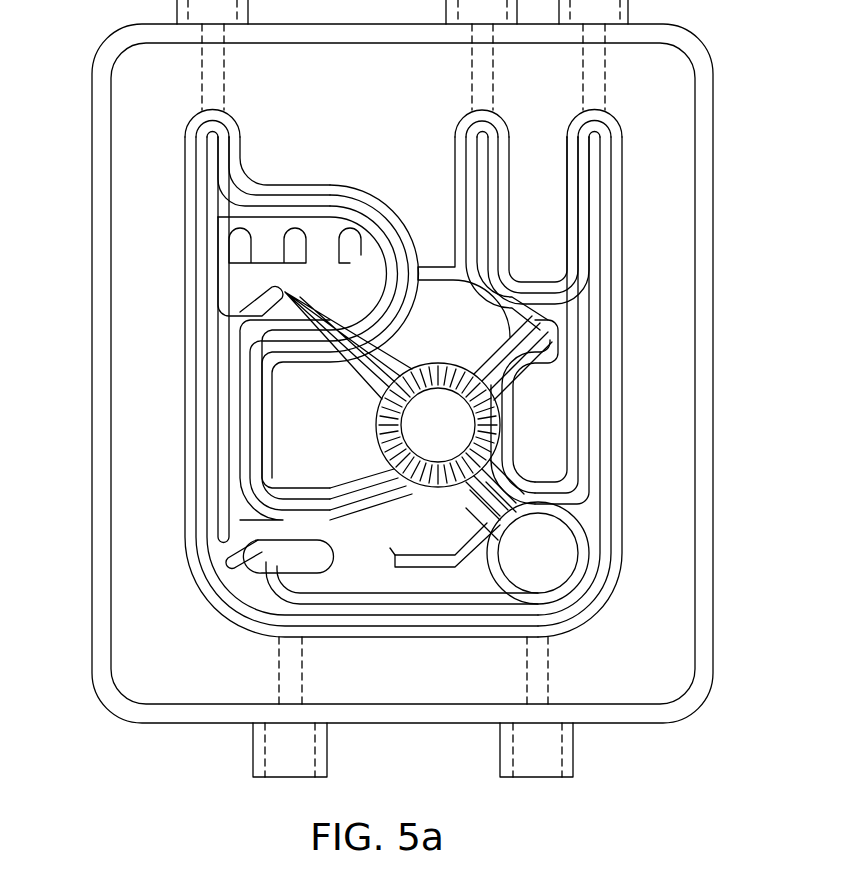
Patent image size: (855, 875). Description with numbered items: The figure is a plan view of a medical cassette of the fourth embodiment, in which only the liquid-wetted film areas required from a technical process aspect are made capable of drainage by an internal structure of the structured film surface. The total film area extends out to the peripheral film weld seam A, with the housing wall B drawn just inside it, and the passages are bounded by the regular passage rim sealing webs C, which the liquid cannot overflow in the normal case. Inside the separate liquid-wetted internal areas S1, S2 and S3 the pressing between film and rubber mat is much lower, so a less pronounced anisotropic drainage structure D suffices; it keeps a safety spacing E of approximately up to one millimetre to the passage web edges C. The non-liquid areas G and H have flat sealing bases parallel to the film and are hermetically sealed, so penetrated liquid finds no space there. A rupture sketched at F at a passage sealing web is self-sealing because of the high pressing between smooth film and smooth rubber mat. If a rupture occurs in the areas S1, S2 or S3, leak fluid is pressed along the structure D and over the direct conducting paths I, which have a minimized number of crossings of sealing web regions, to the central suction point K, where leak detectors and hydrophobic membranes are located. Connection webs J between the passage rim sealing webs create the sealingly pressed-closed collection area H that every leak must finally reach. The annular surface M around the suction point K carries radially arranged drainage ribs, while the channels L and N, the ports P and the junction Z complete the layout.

The peripheral film weld seam A is at (698, 112).
The housing inner wall B is at (713, 225).
The passage rim sealing web C is at (623, 162).
The anisotropic structure D is at (600, 262).
The safety spacing E is at (605, 340).
The rupture at a passage sealing web F is at (360, 207).
The non-liquid area G is at (354, 118).
The collection area H is at (347, 440).
The direct conducting path I is at (360, 375).
The connection web J is at (438, 267).
The suction point K is at (447, 438).
The lower right channel L is at (500, 440).
The annular surface M is at (500, 408).
The lower left channel N is at (323, 488).
The radial ports P is at (447, 368).
The junction Z is at (390, 548).
The liquid-wetted internal area S1 is at (577, 582).
The liquid-wetted internal area S2 is at (220, 555).
The liquid-wetted internal area S3 is at (488, 162).